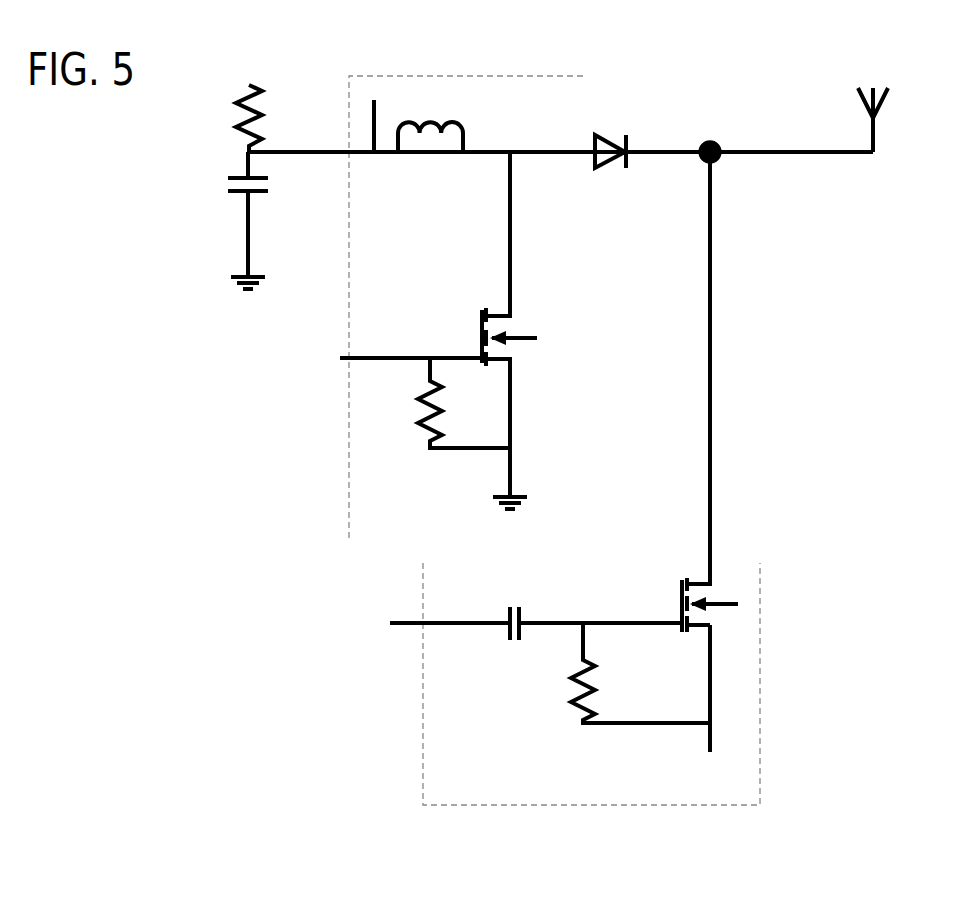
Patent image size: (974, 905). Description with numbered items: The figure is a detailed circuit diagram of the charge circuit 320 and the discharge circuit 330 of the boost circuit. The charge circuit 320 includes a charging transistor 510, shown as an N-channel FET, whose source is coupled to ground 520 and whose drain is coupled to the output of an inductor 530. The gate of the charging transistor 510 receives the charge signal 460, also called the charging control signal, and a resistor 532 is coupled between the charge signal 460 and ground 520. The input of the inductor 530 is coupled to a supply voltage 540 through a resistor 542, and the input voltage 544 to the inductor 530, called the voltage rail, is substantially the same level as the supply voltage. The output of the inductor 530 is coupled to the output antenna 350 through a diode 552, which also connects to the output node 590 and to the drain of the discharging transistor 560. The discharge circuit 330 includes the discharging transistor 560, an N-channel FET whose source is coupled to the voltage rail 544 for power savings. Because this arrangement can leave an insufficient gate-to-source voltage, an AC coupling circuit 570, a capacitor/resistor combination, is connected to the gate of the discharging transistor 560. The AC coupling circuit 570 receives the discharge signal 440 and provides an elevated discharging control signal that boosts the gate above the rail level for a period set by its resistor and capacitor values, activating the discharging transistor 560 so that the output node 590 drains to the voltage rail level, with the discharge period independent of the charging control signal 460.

The supply voltage 540 is at (248, 163).
The resistor 542 is at (238, 123).
The input voltage 544 is at (374, 125).
The inductor 530 is at (447, 128).
The charge circuit 320 is at (593, 300).
The diode 552 is at (608, 140).
The output node 590 is at (711, 141).
The output antenna 350 is at (886, 105).
The charging transistor 510 is at (481, 325).
The charge signal 460 is at (350, 352).
The resistor 532 is at (418, 413).
The ground 520 is at (522, 497).
The discharge circuit 330 is at (760, 733).
The discharge signal 440 is at (391, 627).
The AC coupling circuit 570 is at (553, 652).
The discharging transistor 560 is at (710, 580).